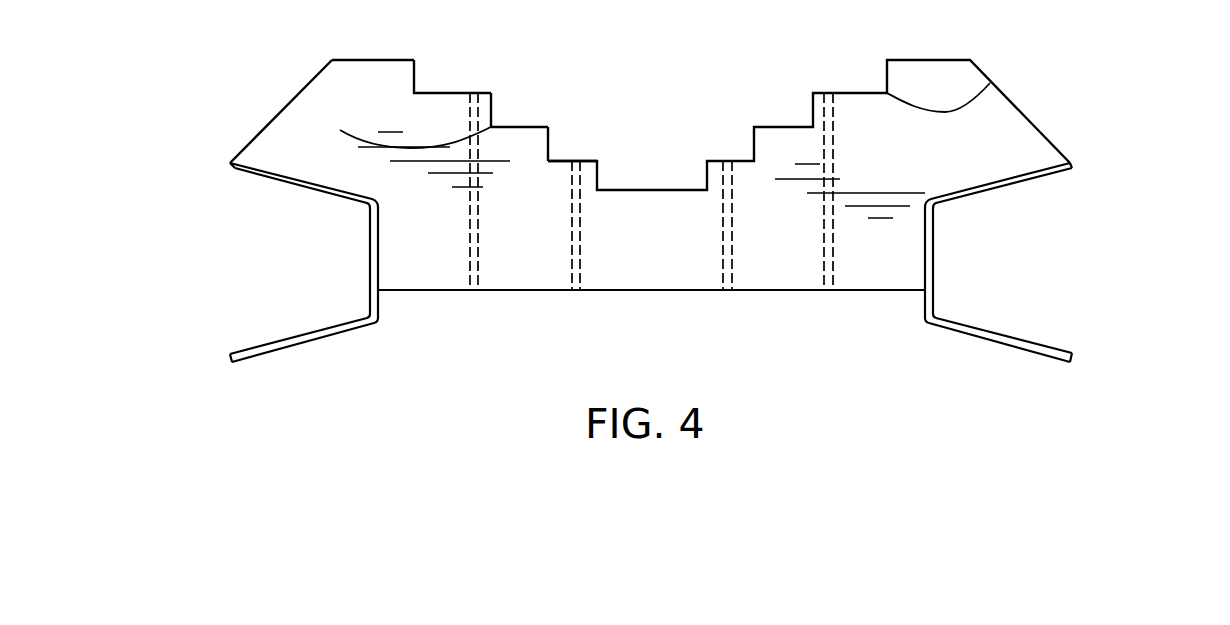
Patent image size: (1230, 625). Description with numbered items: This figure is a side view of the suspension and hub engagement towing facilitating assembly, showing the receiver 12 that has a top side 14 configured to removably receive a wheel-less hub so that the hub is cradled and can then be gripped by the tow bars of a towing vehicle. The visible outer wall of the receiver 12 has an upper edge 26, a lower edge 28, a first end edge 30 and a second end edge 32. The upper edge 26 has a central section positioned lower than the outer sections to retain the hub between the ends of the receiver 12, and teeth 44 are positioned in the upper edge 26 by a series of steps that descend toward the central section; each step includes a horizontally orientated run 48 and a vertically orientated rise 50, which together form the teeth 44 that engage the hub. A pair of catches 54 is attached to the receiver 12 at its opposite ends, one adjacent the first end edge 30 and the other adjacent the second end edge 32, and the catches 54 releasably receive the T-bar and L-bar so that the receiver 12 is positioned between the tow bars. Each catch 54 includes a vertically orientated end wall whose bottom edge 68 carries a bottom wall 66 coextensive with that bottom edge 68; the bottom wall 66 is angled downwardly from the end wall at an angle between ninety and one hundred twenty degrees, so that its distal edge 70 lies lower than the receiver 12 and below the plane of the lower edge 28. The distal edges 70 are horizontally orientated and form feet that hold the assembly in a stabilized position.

The receiver 12 is at (495, 303).
The top side 14 is at (763, 73).
The upper edge 26 is at (372, 60).
The lower edge 28 is at (635, 290).
The first end edge 30 is at (378, 263).
The second end edge 32 is at (925, 240).
The teeth 44 is at (340, 130).
The run 48 is at (533, 127).
The rise 50 is at (492, 110).
The catch 54 is at (320, 280).
The bottom wall 66 is at (1020, 337).
The bottom edge 68 is at (925, 320).
The distal edge 70 is at (1072, 358).